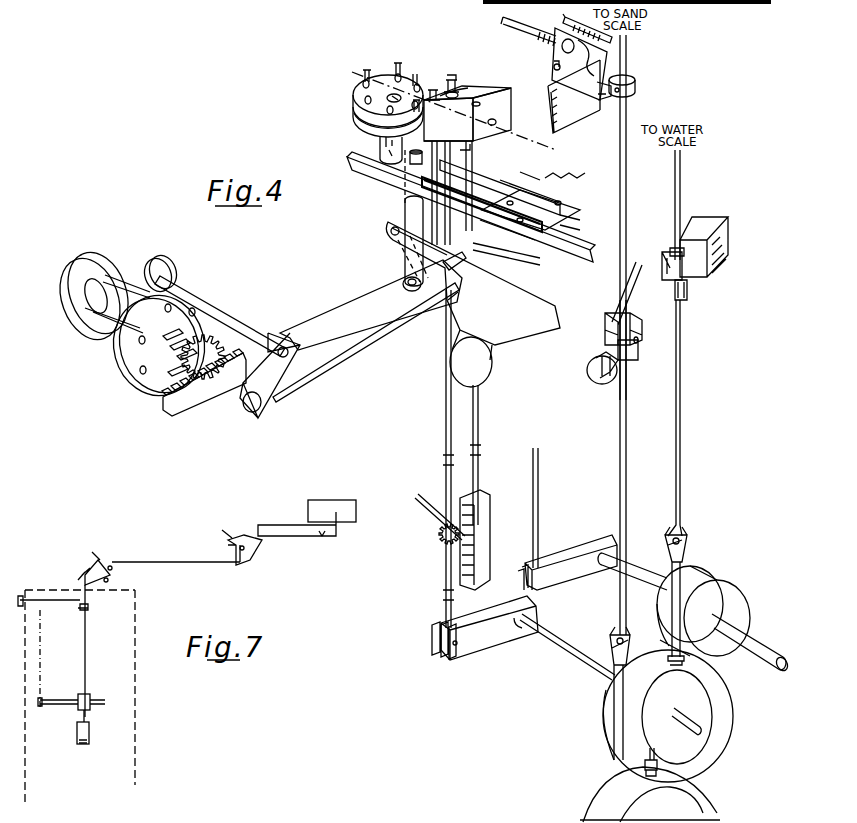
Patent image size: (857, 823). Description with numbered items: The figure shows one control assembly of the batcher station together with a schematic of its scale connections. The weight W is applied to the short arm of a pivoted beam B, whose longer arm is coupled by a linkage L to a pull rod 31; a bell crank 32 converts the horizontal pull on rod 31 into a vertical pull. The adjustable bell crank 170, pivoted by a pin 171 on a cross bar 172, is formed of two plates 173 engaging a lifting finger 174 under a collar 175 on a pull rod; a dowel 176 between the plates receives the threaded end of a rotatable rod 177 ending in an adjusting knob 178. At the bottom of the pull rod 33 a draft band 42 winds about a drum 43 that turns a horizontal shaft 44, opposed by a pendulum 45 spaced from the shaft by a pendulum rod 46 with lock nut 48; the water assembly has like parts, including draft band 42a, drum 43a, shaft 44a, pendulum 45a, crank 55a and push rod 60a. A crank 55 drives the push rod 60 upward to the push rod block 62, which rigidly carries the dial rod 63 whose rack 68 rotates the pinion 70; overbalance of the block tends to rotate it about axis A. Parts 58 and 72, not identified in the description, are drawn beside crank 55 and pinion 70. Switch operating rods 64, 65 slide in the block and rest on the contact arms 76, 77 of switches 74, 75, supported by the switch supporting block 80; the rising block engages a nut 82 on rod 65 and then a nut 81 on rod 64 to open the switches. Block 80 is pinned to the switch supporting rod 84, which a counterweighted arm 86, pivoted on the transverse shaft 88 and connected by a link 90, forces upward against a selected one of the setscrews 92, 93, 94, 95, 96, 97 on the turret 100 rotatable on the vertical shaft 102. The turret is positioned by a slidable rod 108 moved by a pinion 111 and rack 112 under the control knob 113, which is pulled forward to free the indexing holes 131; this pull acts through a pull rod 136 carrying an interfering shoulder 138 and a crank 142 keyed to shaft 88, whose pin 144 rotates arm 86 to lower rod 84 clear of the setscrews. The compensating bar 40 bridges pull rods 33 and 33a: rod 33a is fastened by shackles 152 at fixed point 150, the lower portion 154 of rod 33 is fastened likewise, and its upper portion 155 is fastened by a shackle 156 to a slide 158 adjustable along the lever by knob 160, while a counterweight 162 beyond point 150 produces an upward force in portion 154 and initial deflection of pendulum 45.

In FIG. 4, the axis A is at (450, 114).
In FIG. 4, the setscrew 94 is at (368, 101).
In FIG. 4, the setscrew 93 is at (372, 118).
In FIG. 4, the selector block or turret 100 is at (362, 128).
In FIG. 4, the vertical shaft 102 is at (380, 148).
In FIG. 4, the setscrew 95 is at (367, 72).
In FIG. 4, the setscrew 96 is at (397, 65).
In FIG. 4, the setscrew 97 is at (415, 75).
In FIG. 4, the setscrew 92 is at (416, 98).
In FIG. 4, the switch operating rod 64 is at (432, 90).
In FIG. 4, the switch operating rod 65 is at (452, 75).
In FIG. 4, the nut 82 is at (460, 90).
In FIG. 4, the push rod block 62 is at (493, 92).
In FIG. 4, the nut 81 is at (448, 126).
In FIG. 4, the switch 74 is at (426, 193).
In FIG. 4, the switch 75 is at (470, 158).
In FIG. 4, the switch mount or supporting block 80 is at (372, 172).
In FIG. 4, the contact-bearing arm 76 is at (490, 195).
In FIG. 4, the contact-bearing arm 77 is at (515, 195).
In FIG. 4, the switch supporting rod 84 is at (412, 208).
In FIG. 4, the counterweighted arm 86 is at (540, 310).
In FIG. 4, the link 90 is at (408, 294).
In FIG. 4, the pin 144 is at (447, 300).
In FIG. 4, the transversely slidable rod 108 is at (318, 305).
In FIG. 4, the transverse shaft 88 is at (375, 325).
In FIG. 4, the crank 142 is at (268, 398).
In FIG. 4, the pull rod 136 is at (220, 316).
In FIG. 4, the control knob 113 is at (82, 332).
In FIG. 4, the indexing holes 131 is at (143, 376).
In FIG. 4, the interfering shoulder 138 is at (172, 268).
In FIG. 4, the pinion 111 is at (198, 340).
In FIG. 4, the rack 112 is at (170, 413).
In FIG. 4, the push rod 60 is at (444, 460).
In FIG. 4, the indicator or dial rod 63 is at (478, 460).
In FIG. 4, the rack 68 is at (485, 505).
In FIG. 4, the pinion 70 is at (440, 536).
In FIG. 4, the shaft 72 is at (425, 505).
In FIG. 4, the clamp 58 is at (456, 652).
In FIG. 4, the crank 55 is at (480, 645).
In FIG. 4, the push rod 60a is at (538, 484).
In FIG. 4, the crank 55a is at (572, 575).
In FIG. 4, the horizontal shaft 44a is at (582, 545).
In FIG. 4, the shaft 44 is at (570, 656).
In FIG. 7, the shaft 44 is at (65, 704).
In FIG. 4, the draft band 42a is at (630, 562).
In FIG. 4, the drum 43a is at (748, 604).
In FIG. 4, the draft band 42 is at (614, 700).
In FIG. 4, the drum 43 is at (610, 715).
In FIG. 7, the drum 43 is at (78, 698).
In FIG. 4, the pendulum 45a is at (730, 738).
In FIG. 4, the pendulum rod 46 is at (645, 772).
In FIG. 4, the pendulum 45 is at (592, 797).
In FIG. 7, the pendulum 45 is at (75, 740).
In FIG. 4, the lock nut 48 is at (661, 804).
In FIG. 4, the pull rod 33 is at (620, 445).
In FIG. 4, the pull rod 33a is at (682, 432).
In FIG. 4, the collar 175 is at (636, 84).
In FIG. 4, the rotatable rod 177 is at (502, 20).
In FIG. 4, the plates 173 is at (582, 21).
In FIG. 4, the dowel 176 is at (561, 47).
In FIG. 4, the pin 171 is at (553, 68).
In FIG. 4, the cross bar 172 is at (590, 115).
In FIG. 4, the lifting finger 174 is at (607, 98).
In FIG. 4, the upper portion of pull rod 155 is at (624, 220).
In FIG. 4, the counterweight 162 is at (726, 232).
In FIG. 4, the compensating bar 40 is at (735, 265).
In FIG. 4, the fixed point 150 is at (665, 272).
In FIG. 4, the shackles 152 is at (703, 288).
In FIG. 4, the shackle 156 is at (606, 314).
In FIG. 4, the slide 158 is at (618, 340).
In FIG. 4, the slide adjustment knob 160 is at (597, 370).
In FIG. 4, the lower portion of pull rod 154 is at (628, 395).
In FIG. 7, the adjusting knob 178 is at (18, 588).
In FIG. 7, the bell crank 32 is at (105, 560).
In FIG. 7, the pull rod 31 is at (183, 562).
In FIG. 7, the linkage L is at (266, 565).
In FIG. 7, the pivoted beam B is at (282, 524).
In FIG. 7, the weight W is at (332, 511).
In FIG. 7, the bell crank 170 is at (83, 623).